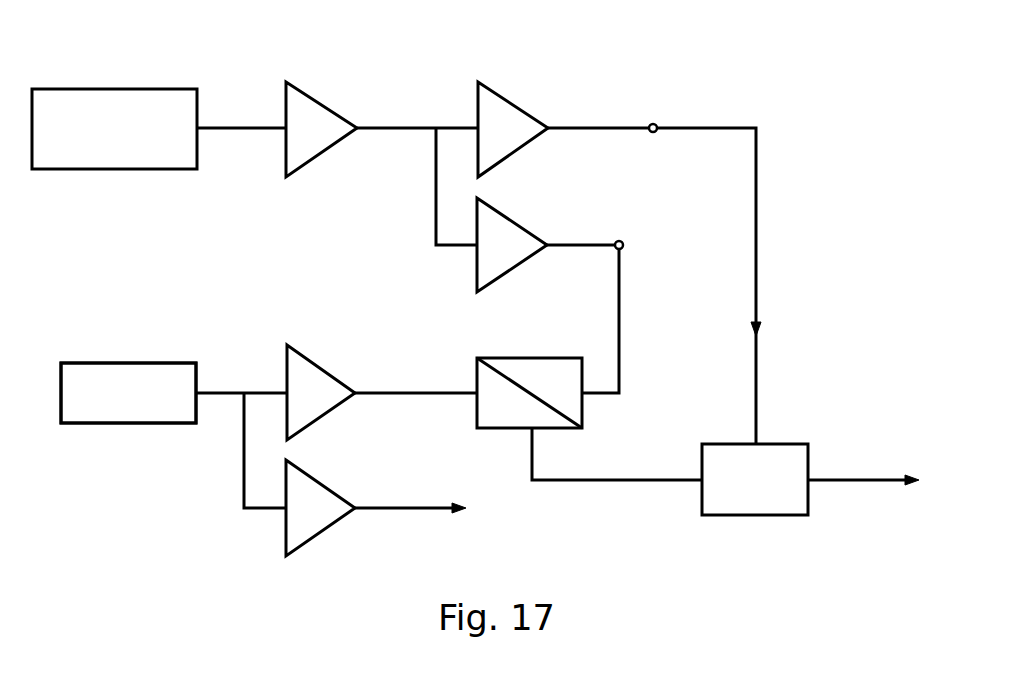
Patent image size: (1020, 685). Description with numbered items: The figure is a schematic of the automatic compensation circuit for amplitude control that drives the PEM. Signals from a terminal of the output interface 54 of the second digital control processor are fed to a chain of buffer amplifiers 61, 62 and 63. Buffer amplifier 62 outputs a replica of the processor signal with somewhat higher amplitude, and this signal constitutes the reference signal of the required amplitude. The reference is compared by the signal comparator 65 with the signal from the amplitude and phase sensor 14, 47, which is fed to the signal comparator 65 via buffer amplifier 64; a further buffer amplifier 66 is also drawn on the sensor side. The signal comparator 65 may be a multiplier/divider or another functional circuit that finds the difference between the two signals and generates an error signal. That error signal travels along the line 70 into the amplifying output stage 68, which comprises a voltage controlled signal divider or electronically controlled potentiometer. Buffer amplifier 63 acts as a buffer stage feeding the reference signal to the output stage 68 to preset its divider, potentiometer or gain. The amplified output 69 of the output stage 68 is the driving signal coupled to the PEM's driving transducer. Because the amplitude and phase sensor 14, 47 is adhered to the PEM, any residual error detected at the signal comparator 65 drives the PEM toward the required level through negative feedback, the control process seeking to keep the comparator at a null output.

The output interface 54 is at (170, 89).
The buffer amplifier 61 is at (318, 101).
The buffer amplifier 62 is at (521, 228).
The buffer amplifier 63 is at (513, 101).
The buffer amplifier 64 is at (320, 366).
The signal comparator 65 is at (548, 358).
The amplifier 66 is at (328, 487).
The output stage 68 is at (755, 515).
The output 69 is at (857, 478).
The feedback line 70 is at (615, 479).
The amplitude and phase sensor 14 is at (157, 363).
The amplitude and phase sensor 47 is at (128, 393).